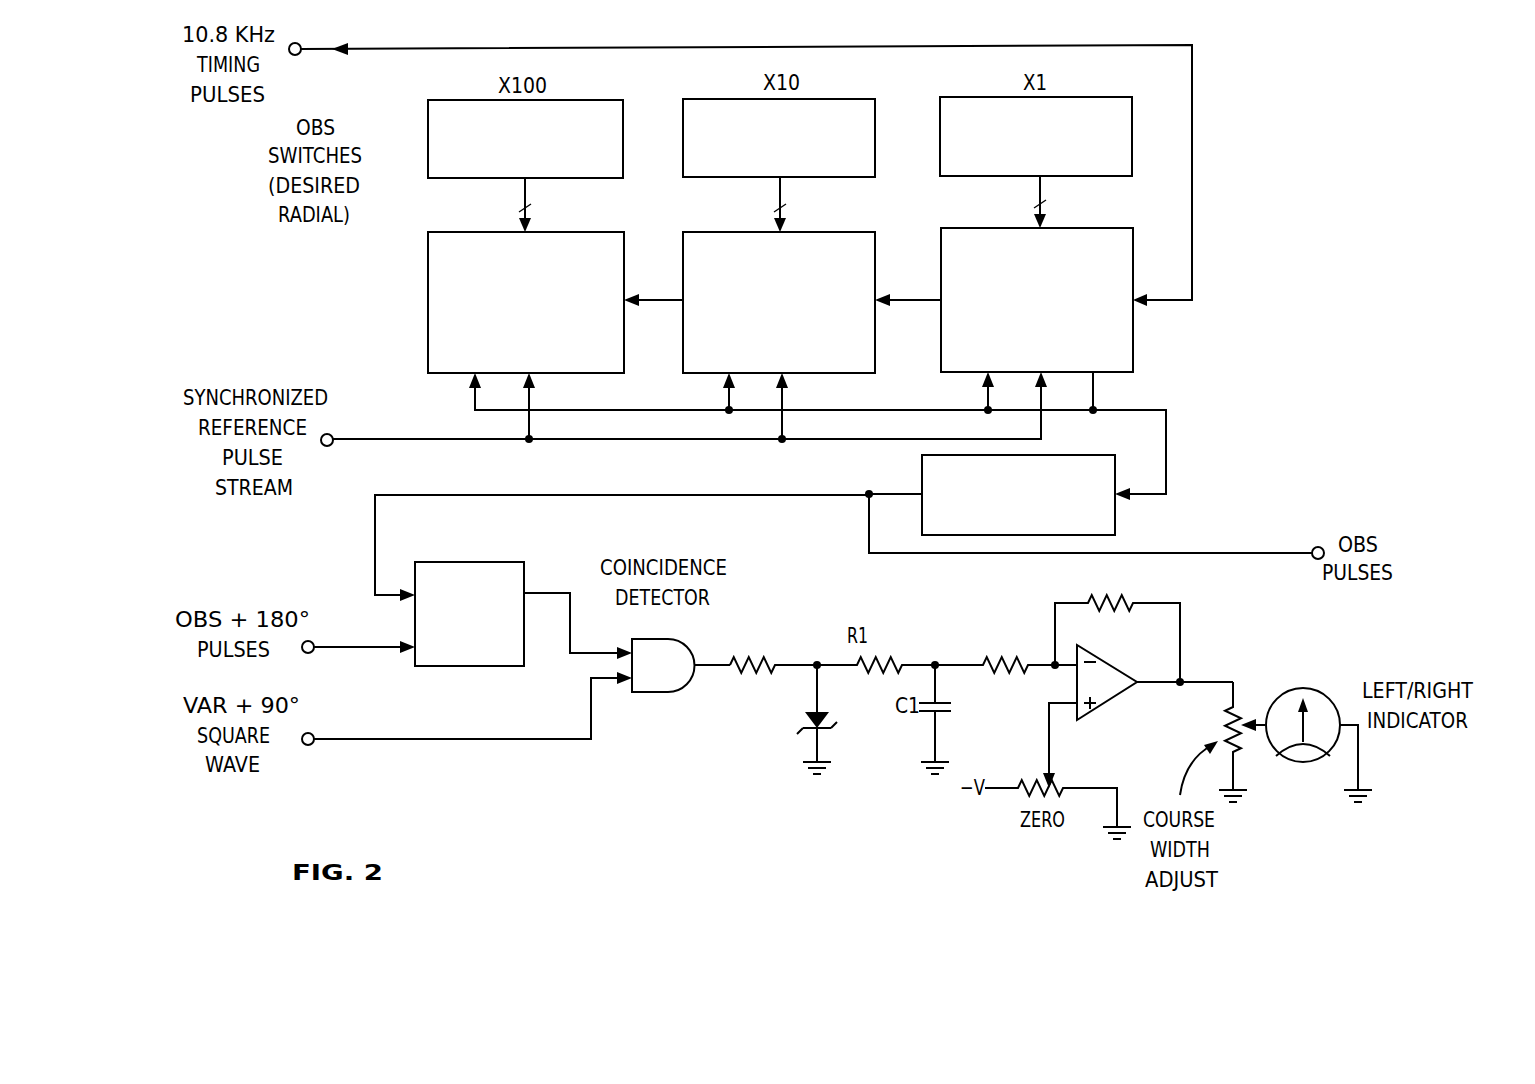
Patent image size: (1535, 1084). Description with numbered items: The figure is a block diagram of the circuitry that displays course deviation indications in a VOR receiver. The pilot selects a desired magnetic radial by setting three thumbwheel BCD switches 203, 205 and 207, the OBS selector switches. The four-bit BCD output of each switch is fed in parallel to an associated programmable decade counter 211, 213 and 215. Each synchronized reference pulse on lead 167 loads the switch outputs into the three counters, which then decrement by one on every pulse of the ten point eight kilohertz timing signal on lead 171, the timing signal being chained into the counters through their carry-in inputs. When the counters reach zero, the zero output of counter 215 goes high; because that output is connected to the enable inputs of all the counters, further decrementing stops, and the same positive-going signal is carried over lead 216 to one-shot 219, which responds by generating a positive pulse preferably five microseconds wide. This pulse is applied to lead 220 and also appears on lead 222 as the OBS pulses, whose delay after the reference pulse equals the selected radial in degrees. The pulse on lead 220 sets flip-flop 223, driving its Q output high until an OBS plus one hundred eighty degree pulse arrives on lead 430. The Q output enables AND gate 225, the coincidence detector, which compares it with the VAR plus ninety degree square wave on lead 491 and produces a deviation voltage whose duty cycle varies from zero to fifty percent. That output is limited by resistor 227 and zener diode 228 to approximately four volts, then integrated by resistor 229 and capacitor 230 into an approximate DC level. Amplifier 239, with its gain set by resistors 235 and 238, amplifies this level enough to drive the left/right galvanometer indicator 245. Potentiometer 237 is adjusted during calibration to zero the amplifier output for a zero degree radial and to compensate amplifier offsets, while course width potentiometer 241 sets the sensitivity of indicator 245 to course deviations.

The lead carrying 10.8 kHz timing signal 171 is at (357, 48).
The BCD switch 203 is at (583, 100).
The BCD switch 205 is at (835, 99).
The BCD switch 207 is at (1093, 97).
The programmable decade counter 211 is at (585, 232).
The programmable decade counter 213 is at (835, 232).
The programmable decade counter 215 is at (1093, 228).
The lead carrying synchronized reference pulses 167 is at (365, 439).
The enable line to one-shot 216 is at (1167, 480).
The one-shot 219 is at (922, 468).
The lead 220 is at (375, 522).
The lead 222 is at (1225, 553).
The flip-flop 223 is at (470, 562).
The lead carrying OBS+180° pulse 430 is at (360, 647).
The lead carrying VAR+90° square wave 491 is at (505, 739).
The AND gate 225 is at (657, 692).
The resistor 227 is at (760, 665).
The zener diode 228 is at (810, 730).
The resistor 229 is at (893, 656).
The capacitor 230 is at (951, 712).
The resistor 235 is at (992, 651).
The potentiometer 237 is at (1058, 782).
The resistor 238 is at (1130, 600).
The amplifier 239 is at (1112, 660).
The course width potentiometer 241 is at (1243, 705).
The left/right indicator 245 is at (1315, 690).